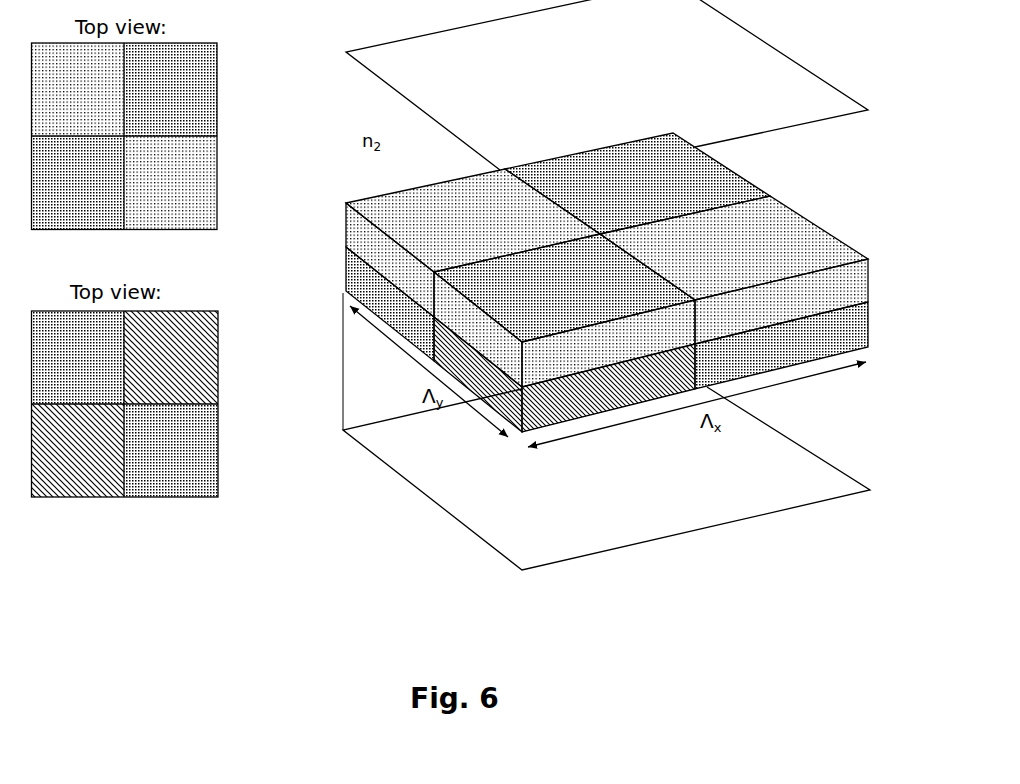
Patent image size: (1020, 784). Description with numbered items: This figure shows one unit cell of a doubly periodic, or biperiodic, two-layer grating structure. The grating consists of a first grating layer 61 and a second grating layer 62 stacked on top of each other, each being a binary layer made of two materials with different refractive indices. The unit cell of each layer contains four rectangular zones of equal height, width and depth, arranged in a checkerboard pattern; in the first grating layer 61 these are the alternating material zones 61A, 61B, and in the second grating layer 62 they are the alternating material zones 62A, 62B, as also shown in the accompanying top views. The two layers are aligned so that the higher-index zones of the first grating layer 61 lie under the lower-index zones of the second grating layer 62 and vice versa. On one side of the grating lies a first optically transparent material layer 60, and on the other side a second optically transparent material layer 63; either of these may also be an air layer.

The first optically transparent material layer 60 is at (342, 362).
The first grating layer 61 is at (230, 347).
The material zone of first grating layer 61A is at (207, 450).
The material zone of first grating layer 61B is at (218, 383).
The second grating layer 62 is at (230, 168).
The material zone of second grating layer 62A is at (198, 215).
The material zone of second grating layer 62B is at (197, 70).
The second optically transparent material layer 63 is at (345, 52).